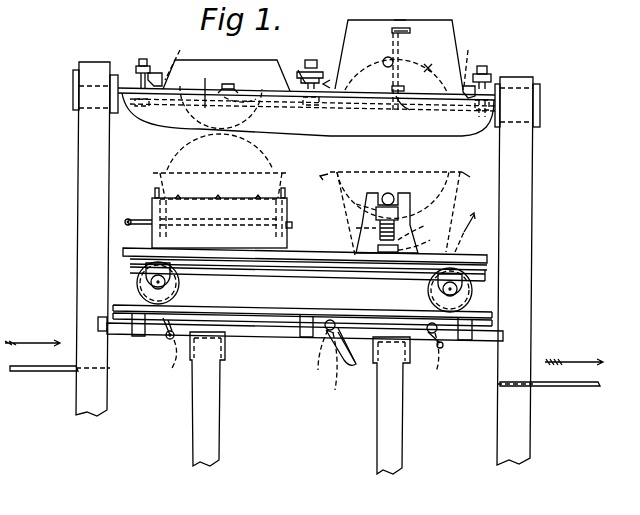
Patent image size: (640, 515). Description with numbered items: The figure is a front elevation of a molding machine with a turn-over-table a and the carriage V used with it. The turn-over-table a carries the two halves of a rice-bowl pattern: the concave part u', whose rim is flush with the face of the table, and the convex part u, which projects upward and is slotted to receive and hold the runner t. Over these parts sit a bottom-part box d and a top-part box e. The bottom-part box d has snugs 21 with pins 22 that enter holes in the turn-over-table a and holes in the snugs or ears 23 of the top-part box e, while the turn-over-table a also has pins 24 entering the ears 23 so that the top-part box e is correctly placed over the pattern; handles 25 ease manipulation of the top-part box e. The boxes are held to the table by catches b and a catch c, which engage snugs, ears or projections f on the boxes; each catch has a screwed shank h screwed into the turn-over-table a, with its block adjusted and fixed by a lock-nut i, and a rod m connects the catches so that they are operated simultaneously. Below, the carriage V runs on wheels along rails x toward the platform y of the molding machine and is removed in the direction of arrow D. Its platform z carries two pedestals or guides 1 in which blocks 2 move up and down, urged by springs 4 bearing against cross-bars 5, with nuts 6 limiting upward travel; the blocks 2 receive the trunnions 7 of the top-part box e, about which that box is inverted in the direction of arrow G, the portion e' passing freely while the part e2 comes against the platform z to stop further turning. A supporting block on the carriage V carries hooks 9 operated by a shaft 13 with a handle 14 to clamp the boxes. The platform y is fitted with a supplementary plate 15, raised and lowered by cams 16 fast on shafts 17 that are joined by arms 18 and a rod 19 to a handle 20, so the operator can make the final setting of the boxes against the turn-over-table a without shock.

The turn-over-table a is at (374, 100).
The rod m is at (172, 97).
The bottom-part box d is at (238, 61).
The concave part of pattern u' is at (197, 85).
The snugs 21 is at (234, 84).
The pins 22 is at (247, 87).
The top-part box e is at (399, 56).
The runner t is at (398, 22).
The handles 25 is at (404, 29).
The trunnions 7 is at (393, 61).
The convex part of pattern u is at (433, 59).
The snugs or ears 23 is at (405, 89).
The pins 24 is at (411, 109).
The portion of molding box e' is at (320, 130).
The part of molding box e2 is at (410, 210).
The screwed shank h is at (139, 60).
The lock-nut i is at (136, 70).
The catches b is at (317, 73).
The snugs, ears or projections f is at (317, 60).
The catch c is at (164, 199).
The platform z is at (234, 221).
The hooks 9 is at (155, 191).
The handle 14 is at (138, 213).
The shaft 13 is at (292, 225).
The pedestals or guides 1 is at (387, 223).
The blocks 2 is at (360, 203).
The springs 4 is at (360, 228).
The cross-bars 5 is at (415, 226).
The nuts 6 is at (417, 240).
The arrow G is at (470, 232).
The carriage V is at (252, 267).
The supplementary plate 15 is at (418, 308).
The rod 19 is at (238, 340).
The platform y is at (262, 336).
The cams 16 is at (164, 334).
The shafts 17 is at (168, 342).
The arms 18 is at (310, 362).
The handle 20 is at (352, 356).
The rails x is at (305, 368).
The arrow D is at (574, 352).